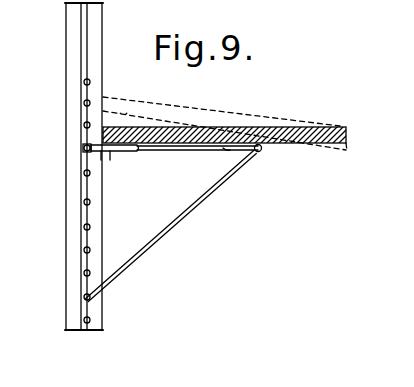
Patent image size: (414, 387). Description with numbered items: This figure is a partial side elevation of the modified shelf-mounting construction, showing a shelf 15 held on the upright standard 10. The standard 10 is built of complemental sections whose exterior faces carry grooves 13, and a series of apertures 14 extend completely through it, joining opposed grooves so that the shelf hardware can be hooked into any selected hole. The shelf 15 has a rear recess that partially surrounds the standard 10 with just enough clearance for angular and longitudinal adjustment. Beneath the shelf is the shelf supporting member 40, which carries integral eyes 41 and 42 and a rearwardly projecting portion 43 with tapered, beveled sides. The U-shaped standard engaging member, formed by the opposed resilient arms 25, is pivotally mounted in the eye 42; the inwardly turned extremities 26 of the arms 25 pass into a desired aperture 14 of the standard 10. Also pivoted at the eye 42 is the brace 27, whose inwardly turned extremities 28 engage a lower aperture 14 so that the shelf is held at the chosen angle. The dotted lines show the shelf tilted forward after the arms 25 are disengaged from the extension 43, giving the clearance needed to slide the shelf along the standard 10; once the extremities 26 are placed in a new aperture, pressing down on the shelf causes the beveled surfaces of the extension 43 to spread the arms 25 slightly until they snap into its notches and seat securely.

The standard 10 is at (72, 30).
The grooves 13 is at (85, 262).
The apertures 14 is at (85, 85).
The shelf 15 is at (348, 132).
The resilient arms 25 is at (88, 151).
The inwardly turned extremities 26 is at (84, 149).
The brace 27 is at (158, 238).
The inwardly turned extremities of brace 28 is at (88, 298).
The shelf supporting member 40 is at (223, 149).
The eye 41 is at (262, 151).
The eye 42 is at (138, 151).
The rearwardly projecting portion 43 is at (107, 159).